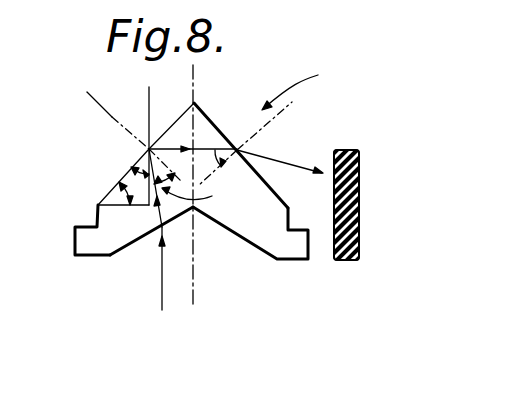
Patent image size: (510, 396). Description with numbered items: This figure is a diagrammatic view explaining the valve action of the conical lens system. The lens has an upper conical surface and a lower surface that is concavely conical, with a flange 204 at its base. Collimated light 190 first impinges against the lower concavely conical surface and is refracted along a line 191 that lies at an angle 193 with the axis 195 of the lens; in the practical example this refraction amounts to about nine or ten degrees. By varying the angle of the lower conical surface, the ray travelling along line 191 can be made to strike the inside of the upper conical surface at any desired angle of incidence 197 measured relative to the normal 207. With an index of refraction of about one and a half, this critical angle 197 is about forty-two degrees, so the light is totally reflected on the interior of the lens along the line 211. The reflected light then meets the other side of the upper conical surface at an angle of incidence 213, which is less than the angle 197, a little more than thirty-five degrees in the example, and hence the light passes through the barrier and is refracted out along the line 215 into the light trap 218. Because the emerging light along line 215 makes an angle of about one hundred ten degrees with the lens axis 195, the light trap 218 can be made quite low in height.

The collimated light 190 is at (162, 297).
The refracted ray line 191 is at (124, 250).
The refraction angle 193 is at (126, 176).
The lens axis 195 is at (193, 306).
The angle of incidence 197 is at (211, 197).
The flange 204 is at (76, 232).
The normal 207 is at (99, 106).
The reflected ray line 211 is at (173, 148).
The second angle of incidence 213 is at (246, 149).
The emerging light line 215 is at (305, 168).
The light trap 218 is at (358, 207).